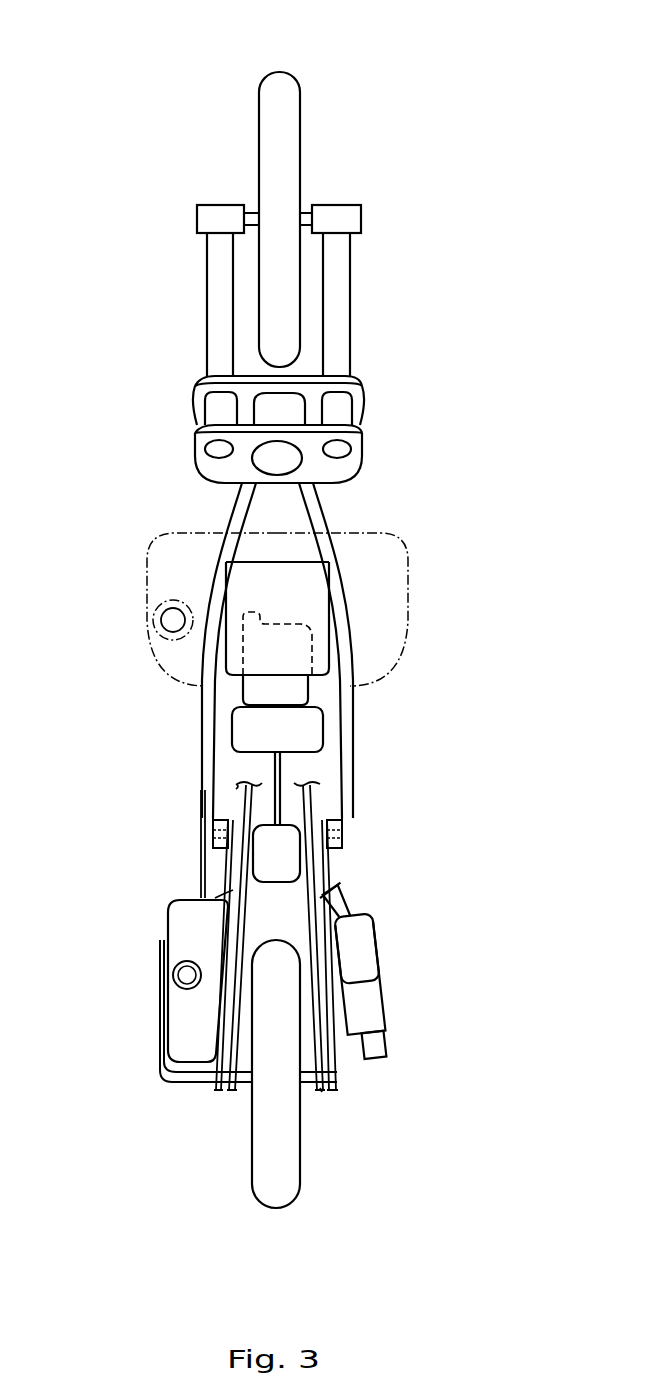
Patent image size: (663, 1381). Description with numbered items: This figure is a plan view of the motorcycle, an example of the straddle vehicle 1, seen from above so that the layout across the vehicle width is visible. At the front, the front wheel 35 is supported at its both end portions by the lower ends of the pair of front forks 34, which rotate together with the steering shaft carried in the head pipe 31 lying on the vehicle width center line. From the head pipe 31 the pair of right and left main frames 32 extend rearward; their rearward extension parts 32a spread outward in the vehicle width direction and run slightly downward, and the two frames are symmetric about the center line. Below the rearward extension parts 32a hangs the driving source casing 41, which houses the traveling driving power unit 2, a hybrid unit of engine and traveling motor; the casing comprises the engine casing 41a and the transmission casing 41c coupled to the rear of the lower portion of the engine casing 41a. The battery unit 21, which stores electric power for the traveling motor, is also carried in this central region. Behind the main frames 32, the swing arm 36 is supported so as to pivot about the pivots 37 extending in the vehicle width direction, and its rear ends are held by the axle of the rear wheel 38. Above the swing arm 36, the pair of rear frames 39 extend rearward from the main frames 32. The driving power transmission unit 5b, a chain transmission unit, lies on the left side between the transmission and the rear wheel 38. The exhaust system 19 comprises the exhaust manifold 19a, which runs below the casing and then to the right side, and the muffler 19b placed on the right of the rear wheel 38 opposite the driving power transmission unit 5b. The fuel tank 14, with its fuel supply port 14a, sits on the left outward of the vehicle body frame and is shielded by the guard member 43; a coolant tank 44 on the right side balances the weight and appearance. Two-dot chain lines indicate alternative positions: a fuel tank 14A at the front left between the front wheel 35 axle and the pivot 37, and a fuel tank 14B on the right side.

The straddle vehicle 1 is at (521, 114).
The front wheel 35 is at (300, 130).
The front forks 34 is at (200, 297).
The head pipe 31 is at (268, 413).
The main frame 32 is at (275, 646).
The rearward extension part 32a is at (245, 500).
The fuel tank 14A is at (153, 577).
The fuel tank 14B is at (406, 577).
The traveling driving power unit 2 is at (315, 641).
The battery unit 21 is at (236, 607).
The engine casing 41a is at (302, 690).
The driving source casing 41 is at (222, 688).
The transmission casing 41c is at (318, 741).
The pivot 37 is at (205, 815).
The driving power transmission unit 5b is at (200, 848).
The rear frames 39 is at (212, 1086).
The fuel tank 14 is at (178, 1037).
The fuel supply port 14a is at (185, 975).
The guard member 43 is at (160, 1010).
The rear wheel 38 is at (270, 1212).
The swing arm 36 is at (322, 1092).
The exhaust system 19 is at (426, 968).
The exhaust manifold 19a is at (353, 892).
The muffler 19b is at (361, 990).
The coolant tank 44 is at (356, 948).